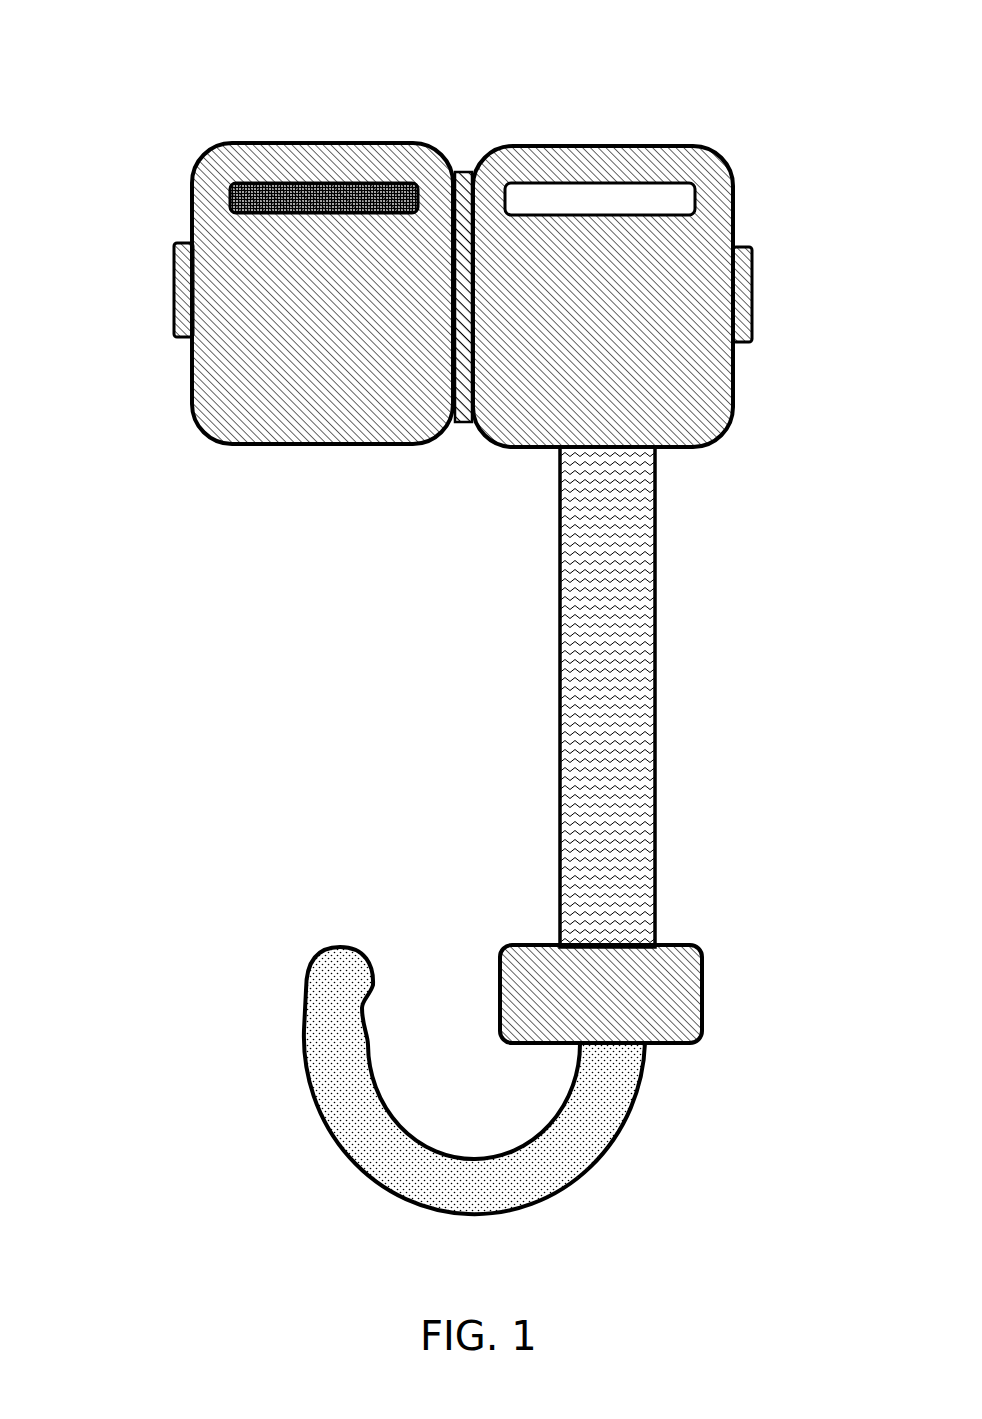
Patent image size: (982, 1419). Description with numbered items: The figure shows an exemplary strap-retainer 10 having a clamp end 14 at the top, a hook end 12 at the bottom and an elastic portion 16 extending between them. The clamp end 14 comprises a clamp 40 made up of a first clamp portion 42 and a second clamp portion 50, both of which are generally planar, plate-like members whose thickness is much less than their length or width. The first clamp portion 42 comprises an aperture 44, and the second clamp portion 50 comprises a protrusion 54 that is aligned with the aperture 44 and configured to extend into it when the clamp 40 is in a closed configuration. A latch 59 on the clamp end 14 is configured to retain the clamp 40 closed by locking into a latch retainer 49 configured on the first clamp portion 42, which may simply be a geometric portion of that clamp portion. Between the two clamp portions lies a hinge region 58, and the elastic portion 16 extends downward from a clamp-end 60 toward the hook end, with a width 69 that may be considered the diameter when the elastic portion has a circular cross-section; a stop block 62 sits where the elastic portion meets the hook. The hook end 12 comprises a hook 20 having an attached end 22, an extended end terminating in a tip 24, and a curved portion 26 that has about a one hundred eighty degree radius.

The strap-retainer 10 is at (180, 133).
The hook end 12 is at (327, 1063).
The clamp end 14 is at (713, 185).
The elastic portion 16 is at (632, 737).
The hook 20 is at (373, 1152).
The attached end 22 is at (645, 1047).
The hook tip 24 is at (350, 962).
The curved portion 26 is at (452, 1190).
The clamp 40 is at (312, 445).
The first clamp portion 42 is at (695, 392).
The aperture 44 is at (608, 205).
The latch retainer 49 is at (740, 302).
The second clamp portion 50 is at (210, 392).
The protrusion 54 is at (316, 200).
The hinge 58 is at (460, 420).
The latch 59 is at (175, 268).
The clamp-end 60 is at (657, 450).
The stop block 62 is at (655, 930).
The width 69 is at (763, 785).